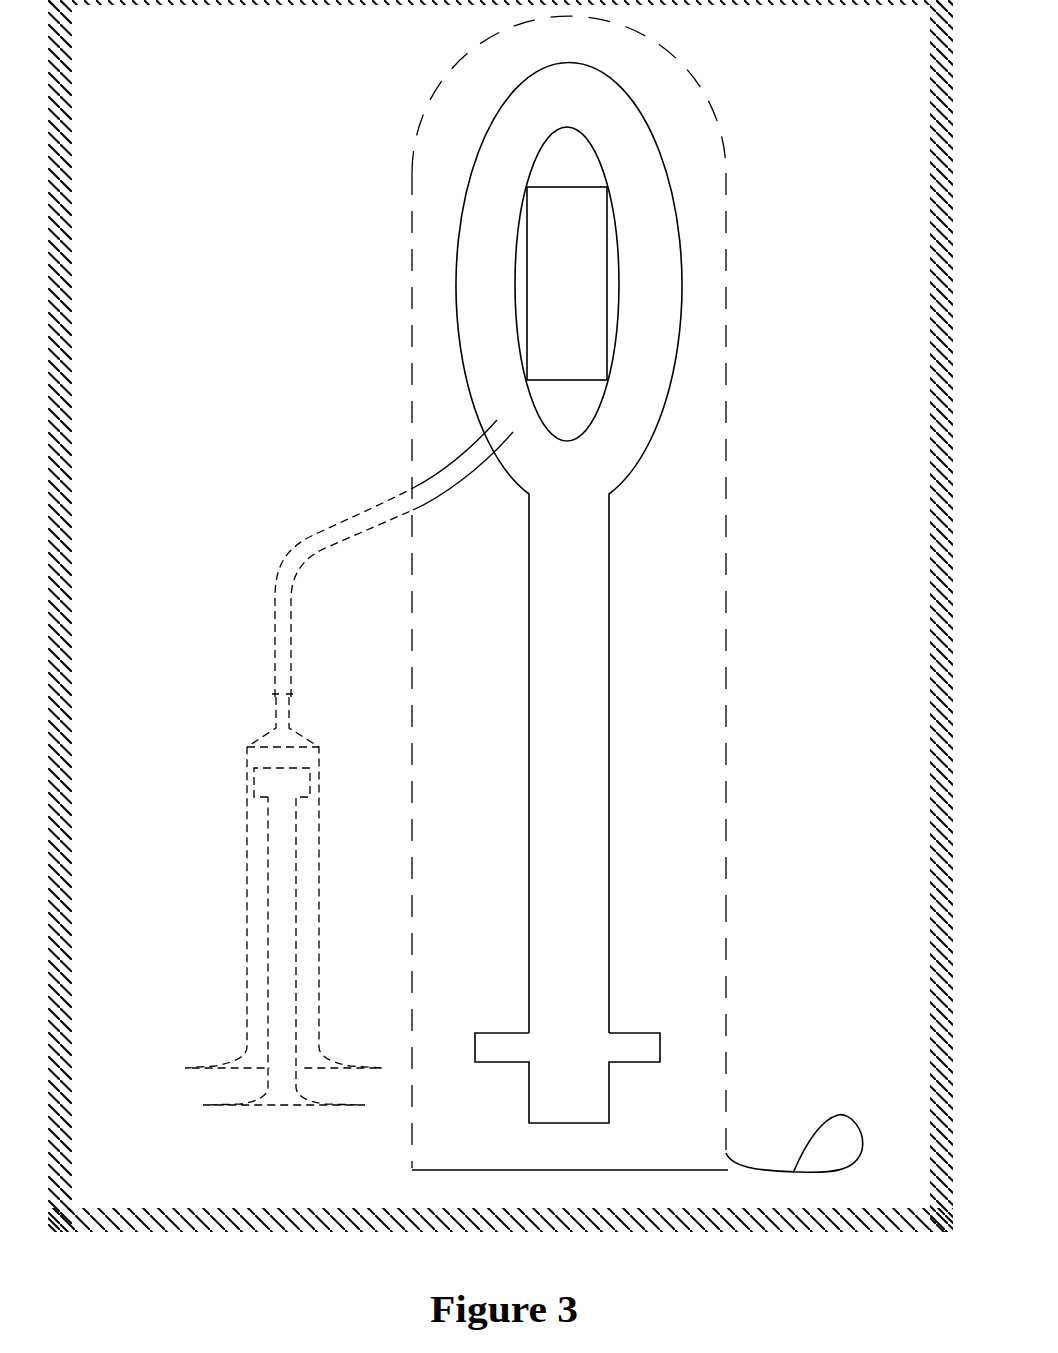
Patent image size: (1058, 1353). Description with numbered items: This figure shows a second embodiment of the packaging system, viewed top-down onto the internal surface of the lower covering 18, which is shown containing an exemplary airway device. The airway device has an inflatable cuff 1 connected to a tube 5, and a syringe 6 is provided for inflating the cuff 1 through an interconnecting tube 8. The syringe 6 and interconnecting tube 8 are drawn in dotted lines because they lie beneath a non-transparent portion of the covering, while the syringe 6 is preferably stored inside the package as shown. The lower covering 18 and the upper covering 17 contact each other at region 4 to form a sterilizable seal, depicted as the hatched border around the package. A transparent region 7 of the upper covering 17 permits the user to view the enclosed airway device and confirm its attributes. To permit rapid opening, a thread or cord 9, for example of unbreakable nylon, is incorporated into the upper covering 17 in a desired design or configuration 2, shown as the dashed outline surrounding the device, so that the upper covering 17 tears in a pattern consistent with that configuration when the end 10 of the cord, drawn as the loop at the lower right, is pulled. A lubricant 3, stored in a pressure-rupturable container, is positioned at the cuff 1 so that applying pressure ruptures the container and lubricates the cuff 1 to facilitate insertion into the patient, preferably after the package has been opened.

The inflatable cuff 1 is at (638, 547).
The design or configuration 2 is at (644, 593).
The lubricant 3 is at (663, 253).
The region 4 is at (500, 616).
The tube 5 is at (657, 1059).
The syringe 6 is at (260, 899).
The transparent region 7 is at (745, 648).
The interconnecting tube 8 is at (356, 558).
The thread or cord 9 is at (762, 1019).
The end of the cord 10 is at (825, 1099).
The upper covering 17 is at (249, 311).
The lower covering 18 is at (526, 634).